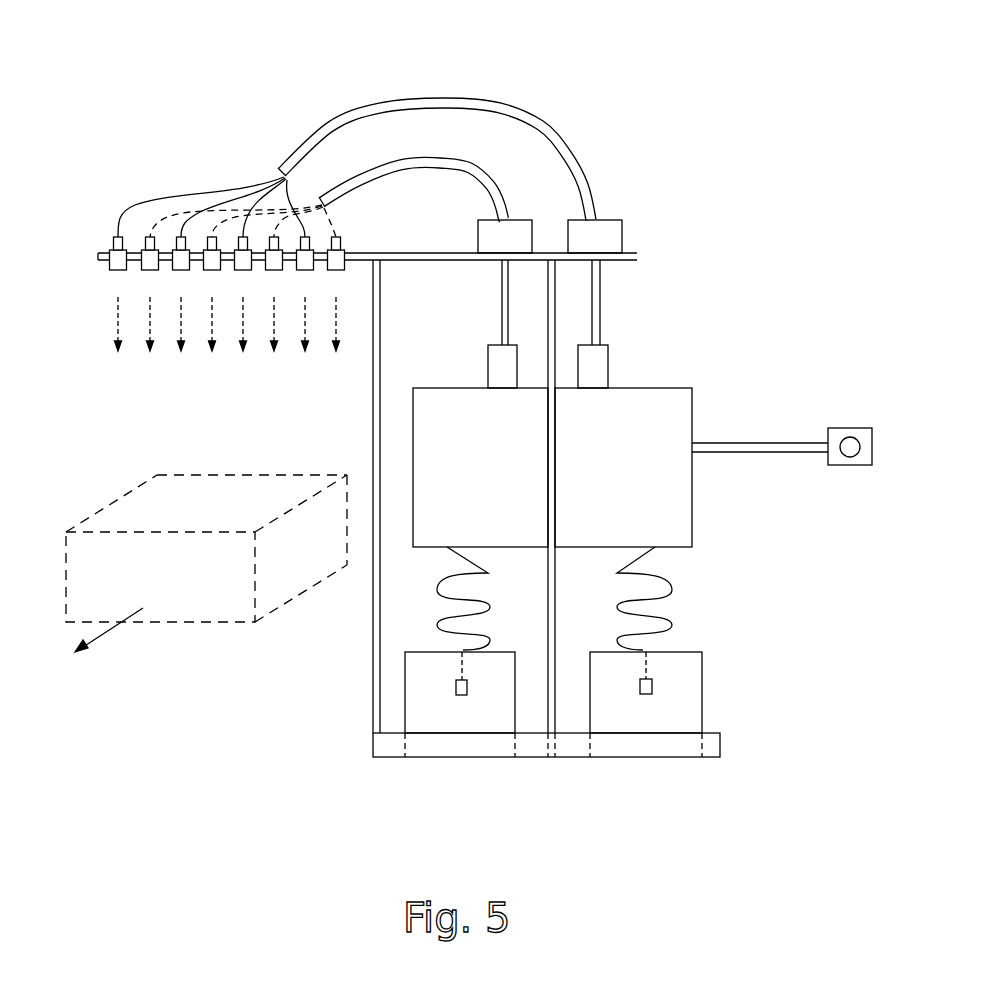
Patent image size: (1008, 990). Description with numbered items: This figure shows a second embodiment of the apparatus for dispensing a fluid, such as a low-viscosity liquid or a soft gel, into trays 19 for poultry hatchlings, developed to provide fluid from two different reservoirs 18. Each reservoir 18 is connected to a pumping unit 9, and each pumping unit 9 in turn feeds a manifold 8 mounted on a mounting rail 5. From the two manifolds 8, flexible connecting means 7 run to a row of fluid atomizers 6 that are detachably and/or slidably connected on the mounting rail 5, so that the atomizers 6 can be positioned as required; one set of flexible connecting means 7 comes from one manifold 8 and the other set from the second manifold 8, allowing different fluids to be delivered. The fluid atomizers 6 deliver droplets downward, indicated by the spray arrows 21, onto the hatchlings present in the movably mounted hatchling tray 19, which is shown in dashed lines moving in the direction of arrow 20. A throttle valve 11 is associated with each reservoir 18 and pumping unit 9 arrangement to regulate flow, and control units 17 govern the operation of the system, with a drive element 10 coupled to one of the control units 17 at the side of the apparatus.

The mounting rail 5 is at (410, 255).
The fluid atomizers 6 is at (150, 263).
The flexible connecting means 7 is at (384, 112).
The manifold 8 is at (500, 237).
The pumping unit 9 is at (503, 363).
The drive 10 is at (852, 452).
The throttle valve 11 is at (456, 687).
The control unit 17 is at (470, 438).
The reservoir 18 is at (433, 708).
The hatchling tray 19 is at (192, 592).
The conveying direction 20 is at (103, 632).
The spray jets 21 is at (305, 318).